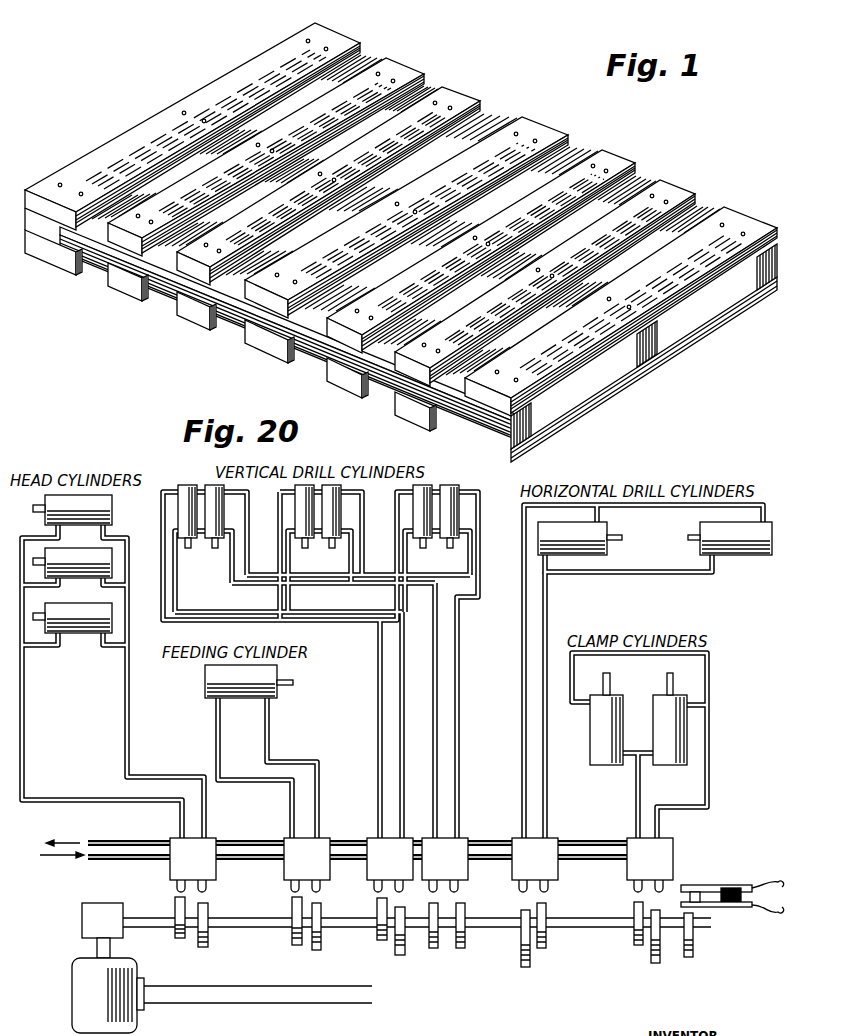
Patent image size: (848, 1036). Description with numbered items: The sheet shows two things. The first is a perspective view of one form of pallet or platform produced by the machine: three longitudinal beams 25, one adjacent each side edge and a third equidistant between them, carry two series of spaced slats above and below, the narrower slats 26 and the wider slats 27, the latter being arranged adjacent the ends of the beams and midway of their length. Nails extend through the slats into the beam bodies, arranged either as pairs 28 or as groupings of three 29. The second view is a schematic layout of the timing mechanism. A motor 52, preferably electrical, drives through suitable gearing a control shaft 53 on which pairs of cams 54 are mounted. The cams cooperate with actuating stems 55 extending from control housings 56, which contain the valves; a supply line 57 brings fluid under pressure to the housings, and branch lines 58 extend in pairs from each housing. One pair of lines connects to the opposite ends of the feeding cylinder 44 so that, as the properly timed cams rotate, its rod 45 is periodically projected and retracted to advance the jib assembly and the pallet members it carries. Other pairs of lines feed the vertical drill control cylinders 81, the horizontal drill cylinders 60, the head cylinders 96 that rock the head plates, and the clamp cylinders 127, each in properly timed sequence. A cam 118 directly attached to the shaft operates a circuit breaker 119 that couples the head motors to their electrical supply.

In FIG. 1, the beams 25 is at (657, 333).
In FIG. 1, the narrower slats 26 is at (372, 105).
In FIG. 1, the wider slats 27 is at (232, 77).
In FIG. 1, the nails in pairs 28 is at (452, 104).
In FIG. 1, the nails in groups of three 29 is at (80, 196).
In FIG. 20, the head cylinders 96 is at (112, 507).
In FIG. 20, the control cylinder 81 is at (207, 537).
In FIG. 20, the horizontal drill cylinders 60 is at (605, 549).
In FIG. 20, the clamp cylinders 127 is at (653, 695).
In FIG. 20, the feeding cylinder 44 is at (245, 698).
In FIG. 20, the rod 45 is at (290, 684).
In FIG. 20, the branch lines 58 is at (108, 772).
In FIG. 20, the supply line 57 is at (145, 852).
In FIG. 20, the control housings 56 is at (421, 859).
In FIG. 20, the actuating stems 55 is at (200, 888).
In FIG. 20, the cams 54 is at (287, 935).
In FIG. 20, the control shaft 53 is at (612, 932).
In FIG. 20, the motor 52 is at (245, 968).
In FIG. 20, the cam 118 is at (689, 957).
In FIG. 20, the circuit breaker 119 is at (722, 885).